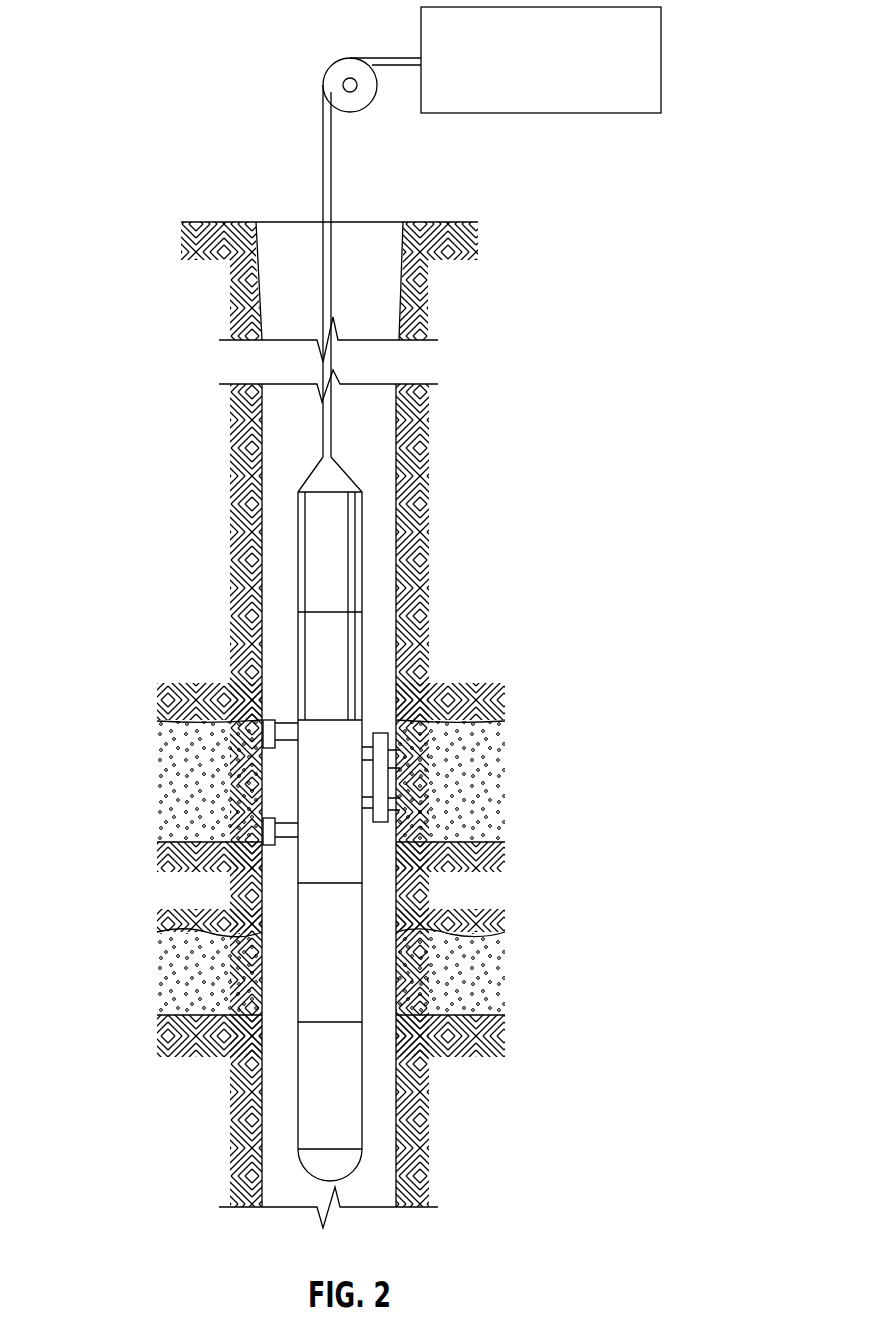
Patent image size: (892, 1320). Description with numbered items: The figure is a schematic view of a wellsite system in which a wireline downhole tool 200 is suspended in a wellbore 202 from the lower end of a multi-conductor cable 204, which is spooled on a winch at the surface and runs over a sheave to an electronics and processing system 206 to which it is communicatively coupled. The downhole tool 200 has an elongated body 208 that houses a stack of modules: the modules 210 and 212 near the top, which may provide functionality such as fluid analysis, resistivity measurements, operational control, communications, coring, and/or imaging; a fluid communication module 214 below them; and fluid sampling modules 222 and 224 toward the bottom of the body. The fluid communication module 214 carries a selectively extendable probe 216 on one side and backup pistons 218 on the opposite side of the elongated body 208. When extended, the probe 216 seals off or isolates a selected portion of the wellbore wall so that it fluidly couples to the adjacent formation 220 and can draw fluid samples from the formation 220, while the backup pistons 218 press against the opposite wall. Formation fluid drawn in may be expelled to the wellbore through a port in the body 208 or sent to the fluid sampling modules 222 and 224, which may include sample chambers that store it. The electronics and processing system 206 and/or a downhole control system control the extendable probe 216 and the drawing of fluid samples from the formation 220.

The wireline downhole tool 200 is at (339, 819).
The wellbore 202 is at (278, 457).
The multi-conductor cable 204 is at (323, 236).
The electronics and processing system 206 is at (591, 114).
The elongated body 208 is at (362, 562).
The module 210 is at (351, 681).
The module 212 is at (351, 572).
The fluid communication module 214 is at (351, 811).
The extendable probe 216 is at (400, 768).
The backup pistons 218 is at (262, 832).
The formation 220 is at (511, 795).
The fluid sampling module 222 is at (351, 955).
The fluid sampling module 224 is at (351, 1094).